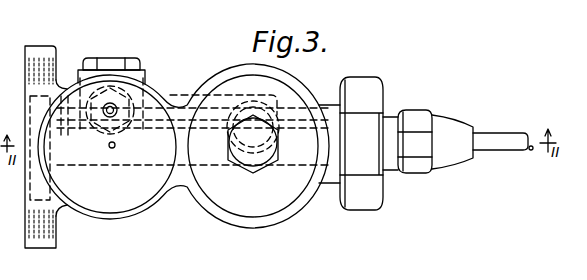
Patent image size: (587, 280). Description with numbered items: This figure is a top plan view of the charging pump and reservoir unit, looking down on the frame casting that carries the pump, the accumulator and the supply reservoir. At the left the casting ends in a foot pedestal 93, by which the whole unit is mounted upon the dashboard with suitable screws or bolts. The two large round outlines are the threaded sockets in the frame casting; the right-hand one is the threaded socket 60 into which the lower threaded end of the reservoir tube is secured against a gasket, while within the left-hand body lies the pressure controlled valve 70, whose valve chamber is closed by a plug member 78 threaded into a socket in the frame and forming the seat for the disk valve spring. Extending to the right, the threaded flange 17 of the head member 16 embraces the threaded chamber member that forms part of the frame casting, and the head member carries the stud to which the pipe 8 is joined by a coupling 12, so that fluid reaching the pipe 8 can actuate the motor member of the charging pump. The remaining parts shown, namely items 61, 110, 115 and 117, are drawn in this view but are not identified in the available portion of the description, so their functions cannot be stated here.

The pipe 8 is at (498, 134).
The coupling 12 is at (437, 114).
The head member 16 is at (389, 98).
The threaded flange 17 is at (359, 88).
The threaded socket 60 is at (290, 216).
The hexagonal plug 61 is at (249, 168).
The pressure controlled valve 70 is at (143, 69).
The plug member 78 is at (113, 59).
The foot pedestal 93 is at (40, 47).
The body casing 110 is at (137, 214).
The inner cylinder wall 115 is at (90, 207).
The small hole 117 is at (110, 149).